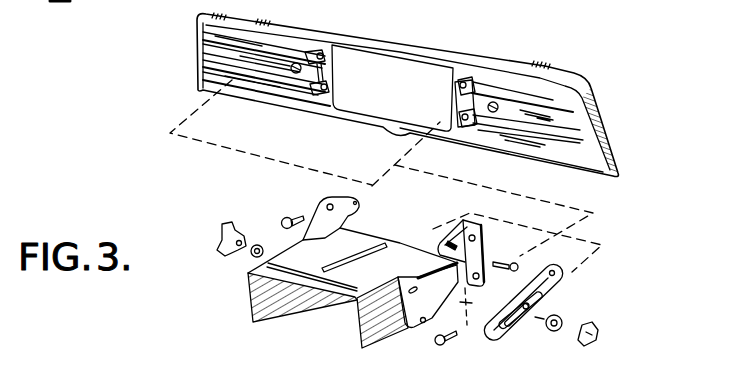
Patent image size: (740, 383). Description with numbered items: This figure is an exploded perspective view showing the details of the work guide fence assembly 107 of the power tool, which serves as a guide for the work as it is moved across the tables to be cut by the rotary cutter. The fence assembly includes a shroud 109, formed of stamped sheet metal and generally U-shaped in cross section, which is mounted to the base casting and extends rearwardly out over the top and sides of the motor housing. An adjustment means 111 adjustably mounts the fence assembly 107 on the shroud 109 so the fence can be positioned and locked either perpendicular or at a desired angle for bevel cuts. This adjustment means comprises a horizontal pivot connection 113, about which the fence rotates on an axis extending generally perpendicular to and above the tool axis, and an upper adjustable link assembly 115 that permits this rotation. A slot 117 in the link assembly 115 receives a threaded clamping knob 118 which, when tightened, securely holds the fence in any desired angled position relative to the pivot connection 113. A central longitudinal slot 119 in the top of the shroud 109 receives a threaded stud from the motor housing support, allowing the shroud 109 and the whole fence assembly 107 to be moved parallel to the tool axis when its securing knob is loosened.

The work guide fence assembly 107 is at (534, 60).
The shroud 109 is at (248, 302).
The adjustment means 111 is at (497, 240).
The horizontal pivot connection 113 is at (360, 206).
The upper adjustable link assembly 115 is at (540, 300).
The slot 117 is at (500, 340).
The threaded clamping knob 118 is at (222, 230).
The central longitudinal slot 119 is at (353, 270).